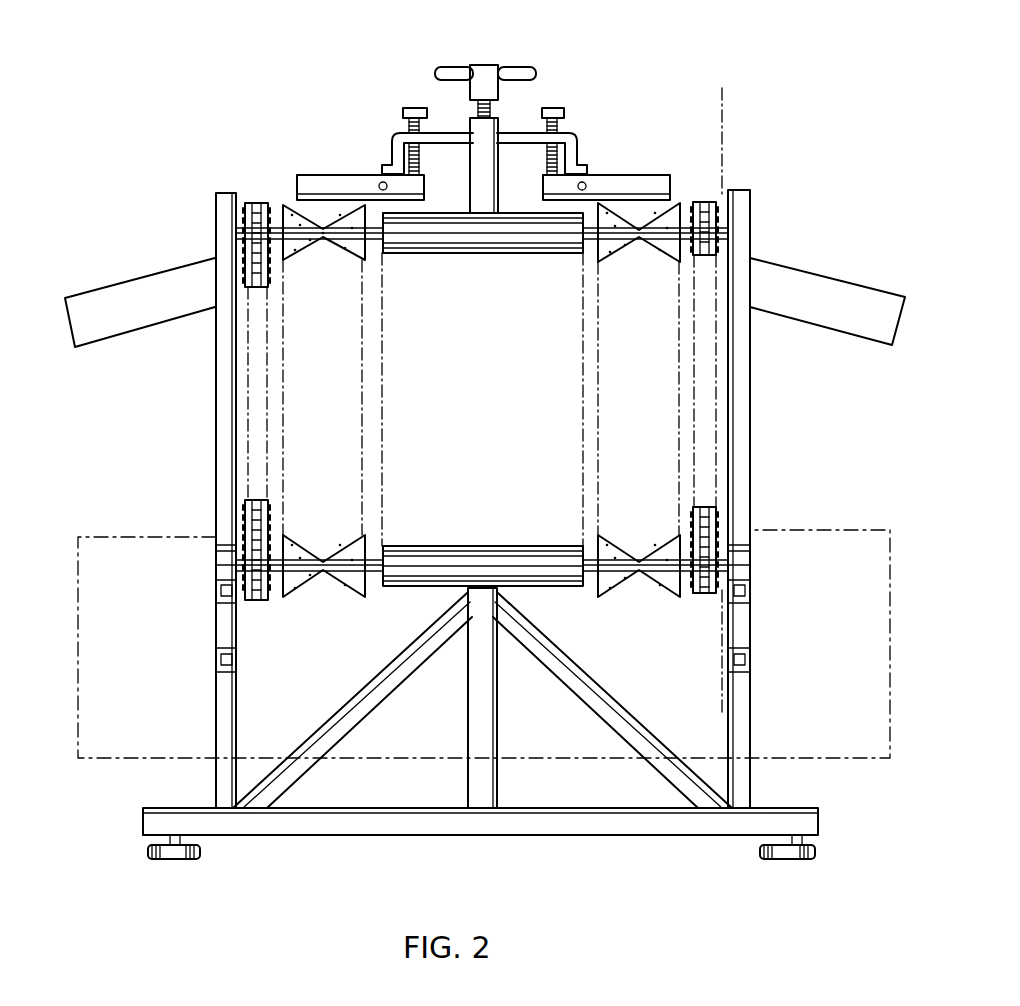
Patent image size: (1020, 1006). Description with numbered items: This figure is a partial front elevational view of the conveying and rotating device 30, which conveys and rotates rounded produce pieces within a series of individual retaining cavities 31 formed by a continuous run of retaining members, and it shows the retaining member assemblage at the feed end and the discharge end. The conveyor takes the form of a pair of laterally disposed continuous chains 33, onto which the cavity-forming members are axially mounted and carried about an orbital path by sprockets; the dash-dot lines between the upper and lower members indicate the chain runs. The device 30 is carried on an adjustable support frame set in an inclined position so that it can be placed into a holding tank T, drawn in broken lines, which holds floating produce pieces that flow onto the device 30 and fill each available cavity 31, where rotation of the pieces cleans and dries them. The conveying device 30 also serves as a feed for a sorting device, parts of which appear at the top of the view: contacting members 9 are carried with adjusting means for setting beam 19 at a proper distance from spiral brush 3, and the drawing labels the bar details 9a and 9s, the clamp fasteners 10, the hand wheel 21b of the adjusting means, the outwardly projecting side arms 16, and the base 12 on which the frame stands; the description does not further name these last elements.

The hand wheel 21b is at (483, 64).
The beam 19 is at (520, 133).
The clamp bolt 10 is at (415, 107).
The contacting members 9 is at (304, 175).
The aperture in support bar 9a is at (380, 184).
The aperture in support bar 9s is at (648, 175).
The side arm 16 is at (93, 300).
The conveying and rotating device 30 is at (678, 347).
The continuous chains 33 is at (248, 502).
The retaining cavities 31 is at (320, 563).
The base 12 is at (588, 822).
The spiral brush 3 is at (728, 88).
The holding tank T is at (880, 530).